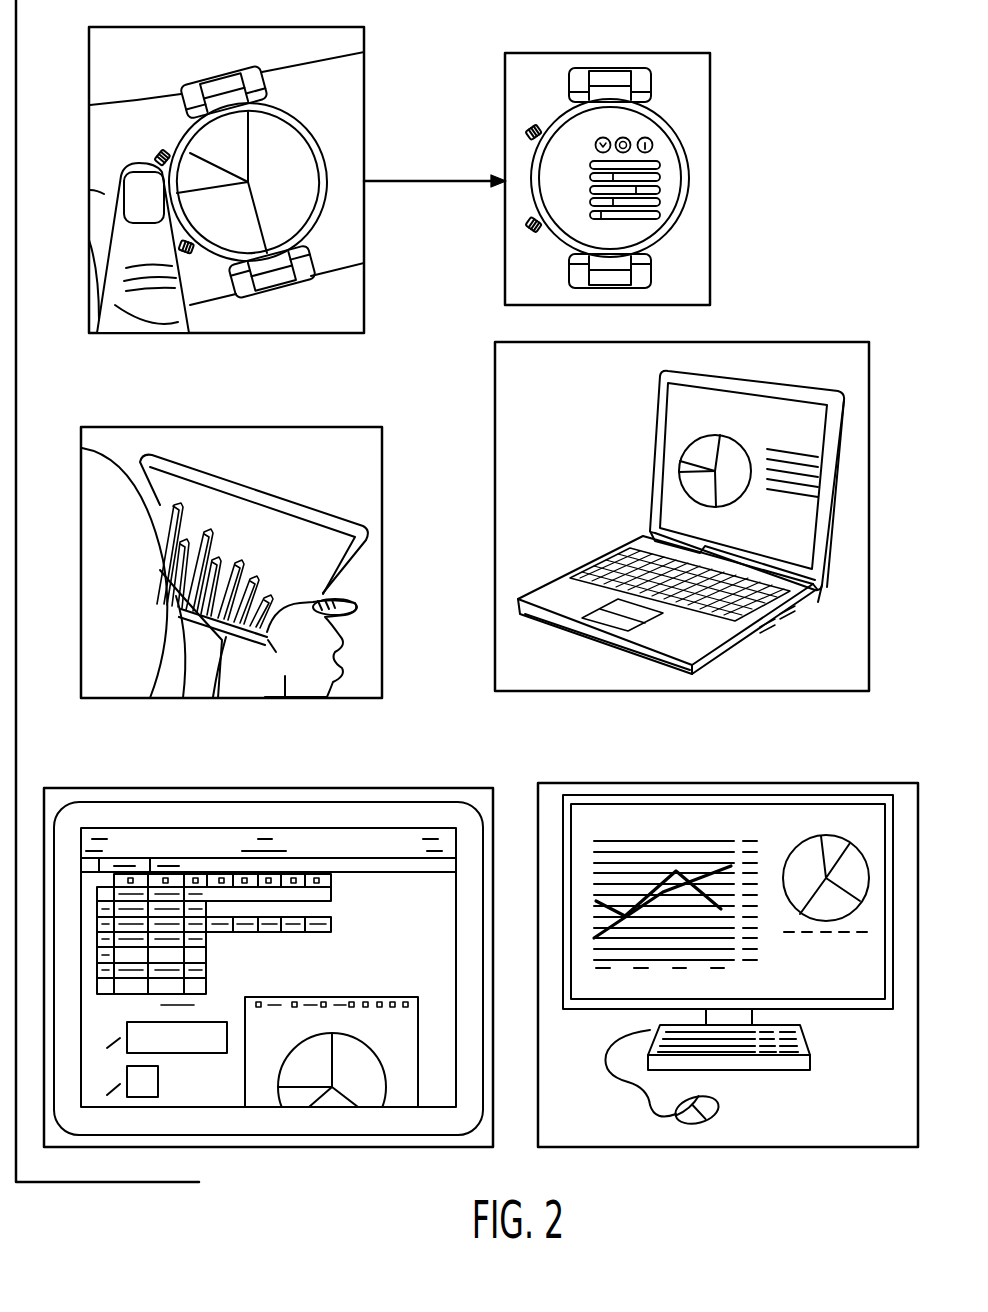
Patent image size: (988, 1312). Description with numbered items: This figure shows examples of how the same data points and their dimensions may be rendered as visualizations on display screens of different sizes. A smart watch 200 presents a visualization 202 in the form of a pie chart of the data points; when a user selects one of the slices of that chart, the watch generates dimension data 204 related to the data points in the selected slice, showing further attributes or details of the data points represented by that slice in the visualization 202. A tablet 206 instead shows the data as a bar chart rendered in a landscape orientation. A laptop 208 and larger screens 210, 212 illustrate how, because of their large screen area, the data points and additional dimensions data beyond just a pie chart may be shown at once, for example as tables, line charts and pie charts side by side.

The smart watch 200 is at (226, 180).
The visualization 202 is at (198, 148).
The dimension data 204 is at (578, 135).
The tablet 206 is at (293, 495).
The laptop 208 is at (767, 382).
The larger screen 210 is at (379, 800).
The larger screen 212 is at (757, 795).